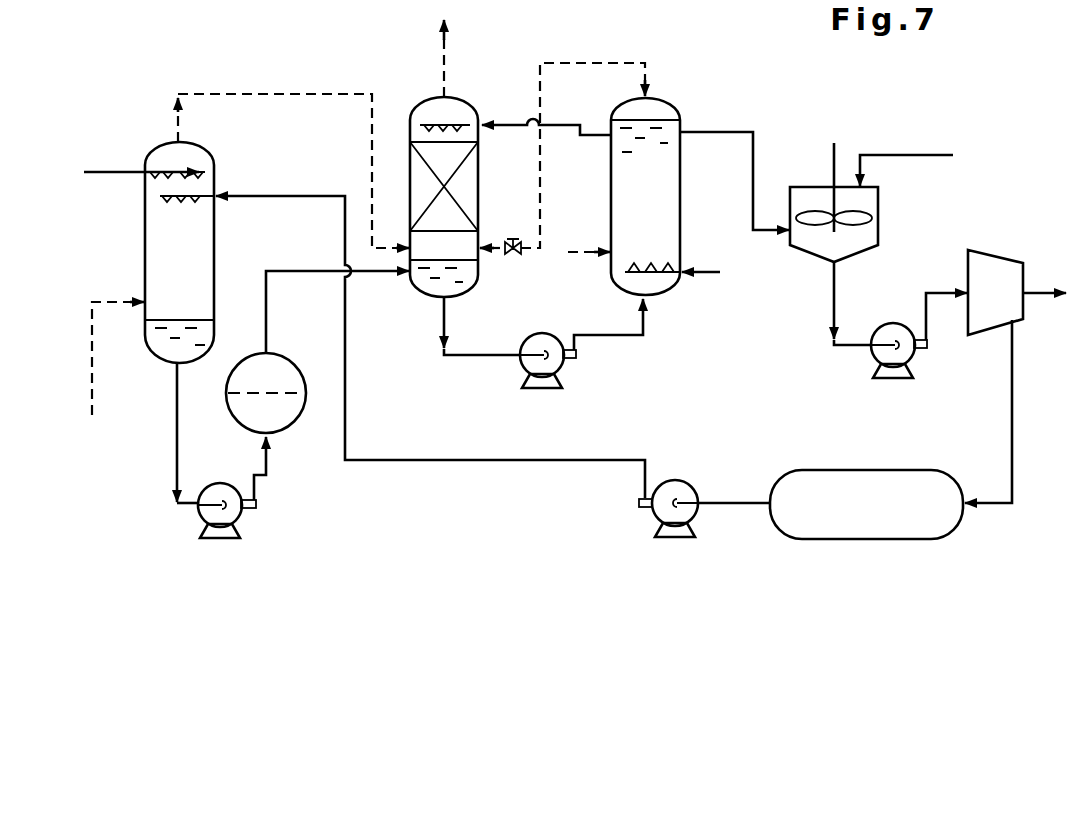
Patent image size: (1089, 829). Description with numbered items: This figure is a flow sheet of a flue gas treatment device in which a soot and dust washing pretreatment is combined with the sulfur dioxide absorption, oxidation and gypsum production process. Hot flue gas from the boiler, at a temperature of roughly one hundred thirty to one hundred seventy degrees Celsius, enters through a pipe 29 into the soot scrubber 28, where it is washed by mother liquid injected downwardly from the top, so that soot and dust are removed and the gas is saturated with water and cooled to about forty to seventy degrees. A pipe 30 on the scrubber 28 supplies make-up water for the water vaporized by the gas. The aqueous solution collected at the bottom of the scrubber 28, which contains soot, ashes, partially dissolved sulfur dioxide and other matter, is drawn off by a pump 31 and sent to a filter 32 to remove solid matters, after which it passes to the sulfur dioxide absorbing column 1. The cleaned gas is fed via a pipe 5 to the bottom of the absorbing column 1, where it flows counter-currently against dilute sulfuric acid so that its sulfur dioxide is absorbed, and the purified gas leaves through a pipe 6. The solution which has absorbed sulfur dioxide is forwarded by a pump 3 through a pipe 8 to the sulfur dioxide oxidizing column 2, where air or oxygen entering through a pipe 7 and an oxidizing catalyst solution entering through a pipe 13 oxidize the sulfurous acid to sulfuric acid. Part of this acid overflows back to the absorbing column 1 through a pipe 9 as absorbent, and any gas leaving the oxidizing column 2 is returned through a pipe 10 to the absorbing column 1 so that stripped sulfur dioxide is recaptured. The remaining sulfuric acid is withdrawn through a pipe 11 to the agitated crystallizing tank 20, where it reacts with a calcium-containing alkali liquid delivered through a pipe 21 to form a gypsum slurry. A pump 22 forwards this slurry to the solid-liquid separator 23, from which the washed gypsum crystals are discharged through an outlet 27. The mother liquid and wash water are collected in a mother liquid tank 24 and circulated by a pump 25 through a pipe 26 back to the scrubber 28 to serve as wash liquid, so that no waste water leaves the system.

The sulfur dioxide absorbing column 1 is at (498, 175).
The sulfur dioxide oxidizing column 2 is at (705, 177).
The pump 3 is at (525, 366).
The pipe 5 is at (310, 92).
The pipe 6 is at (445, 55).
The pipe 7 is at (707, 275).
The pipe 8 is at (612, 337).
The pipe 9 is at (560, 128).
The pipe 10 is at (596, 62).
The pipe 11 is at (723, 130).
The pipe 13 is at (585, 258).
The crystallizing tank 20 is at (880, 220).
The pipe 21 is at (912, 155).
The pump 22 is at (912, 352).
The solid-liquid separator 23 is at (990, 265).
The mother liquid tank 24 is at (835, 478).
The pump 25 is at (690, 489).
The pipe 26 is at (484, 462).
The outlet 27 is at (1040, 296).
The soot scrubber 28 is at (145, 228).
The pipe 29 is at (92, 357).
The pipe 30 is at (113, 170).
The pump 31 is at (205, 517).
The filter 32 is at (292, 427).